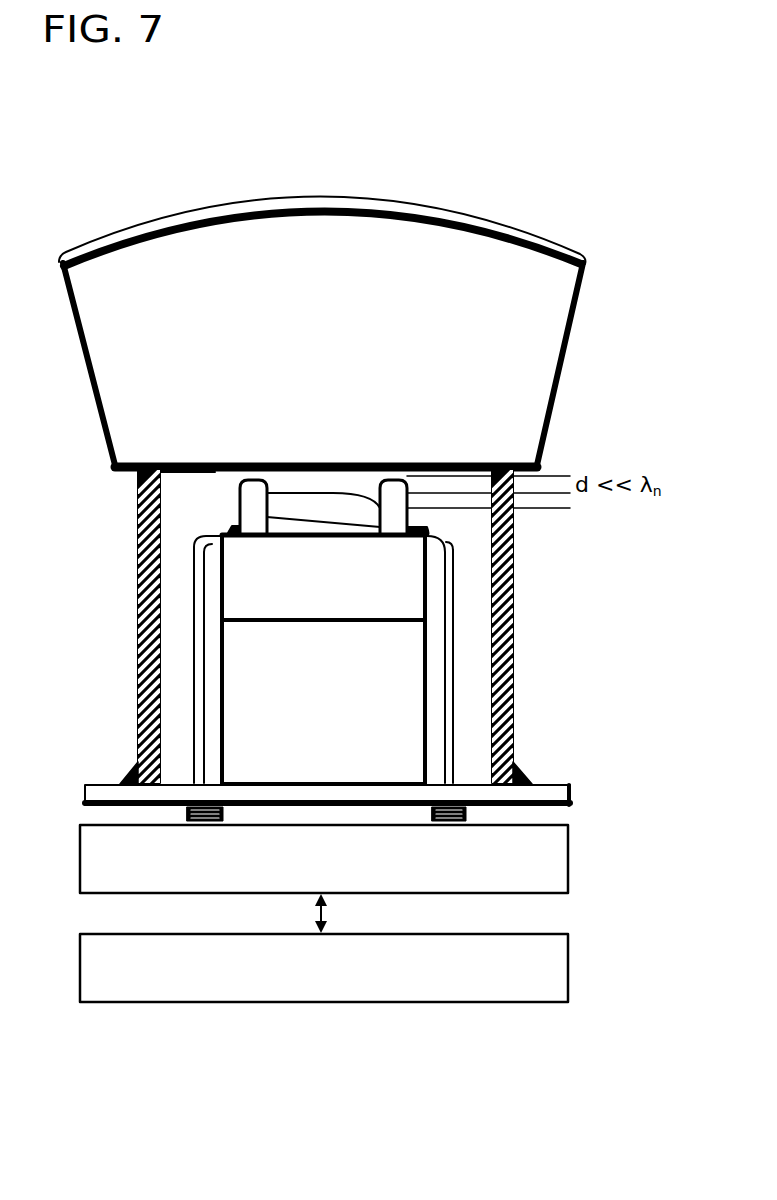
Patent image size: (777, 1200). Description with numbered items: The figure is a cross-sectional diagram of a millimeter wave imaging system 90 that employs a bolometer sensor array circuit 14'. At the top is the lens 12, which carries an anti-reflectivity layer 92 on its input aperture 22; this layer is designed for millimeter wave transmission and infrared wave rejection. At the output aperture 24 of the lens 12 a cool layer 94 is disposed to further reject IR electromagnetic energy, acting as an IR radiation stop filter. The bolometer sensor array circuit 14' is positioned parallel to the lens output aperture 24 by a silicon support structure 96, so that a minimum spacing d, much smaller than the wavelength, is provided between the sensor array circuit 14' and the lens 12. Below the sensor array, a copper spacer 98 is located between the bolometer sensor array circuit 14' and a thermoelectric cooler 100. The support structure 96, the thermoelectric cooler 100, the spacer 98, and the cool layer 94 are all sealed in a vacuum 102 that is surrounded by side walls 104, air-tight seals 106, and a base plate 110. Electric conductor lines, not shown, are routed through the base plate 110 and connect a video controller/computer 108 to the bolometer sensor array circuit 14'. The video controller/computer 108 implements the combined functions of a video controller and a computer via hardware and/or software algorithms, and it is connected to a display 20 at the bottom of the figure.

The imaging system 90 is at (458, 122).
The lens 12 is at (586, 364).
The input aperture 22 is at (338, 213).
The anti-reflectivity layer 92 is at (472, 208).
The cool layer 94 is at (392, 462).
The output aperture 24 is at (175, 462).
The bolometer sensor array circuit 14' is at (428, 526).
The vacuum 102 is at (183, 517).
The silicon support structure 96 is at (402, 540).
The side walls 104 is at (138, 636).
The air-tight seals 106 is at (136, 473).
The spacer 98 is at (414, 612).
The thermoelectric cooler 100 is at (415, 776).
The base plate 110 is at (553, 785).
The video controller/computer 108 is at (570, 879).
The display 20 is at (570, 983).